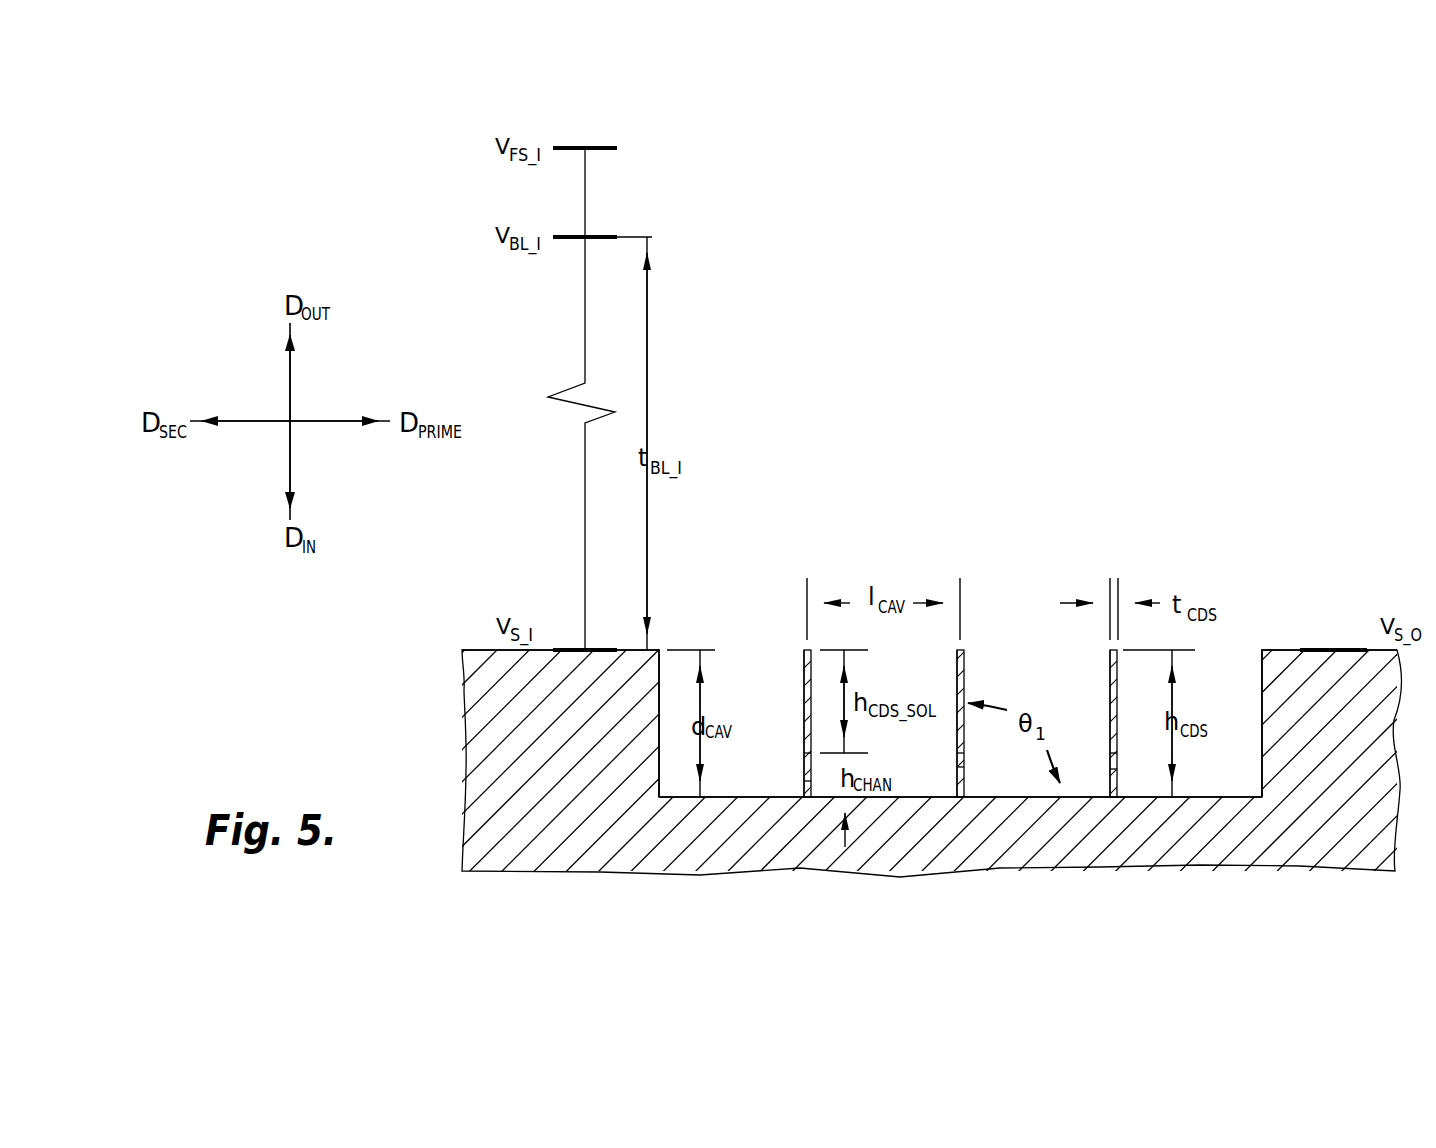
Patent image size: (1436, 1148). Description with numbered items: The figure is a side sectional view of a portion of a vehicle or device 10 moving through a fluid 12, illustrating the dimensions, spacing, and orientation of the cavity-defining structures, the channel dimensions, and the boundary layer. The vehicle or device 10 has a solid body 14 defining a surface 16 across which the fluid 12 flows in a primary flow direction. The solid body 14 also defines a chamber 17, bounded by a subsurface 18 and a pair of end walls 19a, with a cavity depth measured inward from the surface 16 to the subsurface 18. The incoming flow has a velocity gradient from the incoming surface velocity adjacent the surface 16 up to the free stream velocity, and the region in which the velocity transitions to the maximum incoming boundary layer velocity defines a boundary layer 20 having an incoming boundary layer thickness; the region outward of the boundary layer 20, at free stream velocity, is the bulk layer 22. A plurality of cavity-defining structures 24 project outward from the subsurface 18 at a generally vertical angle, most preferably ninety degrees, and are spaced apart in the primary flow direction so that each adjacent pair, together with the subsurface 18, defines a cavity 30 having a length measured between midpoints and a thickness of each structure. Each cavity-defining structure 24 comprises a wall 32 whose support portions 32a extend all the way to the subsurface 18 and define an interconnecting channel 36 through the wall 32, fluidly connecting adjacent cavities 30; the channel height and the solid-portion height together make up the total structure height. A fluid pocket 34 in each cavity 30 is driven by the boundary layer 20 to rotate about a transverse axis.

The vehicle or device 10 is at (1133, 153).
The fluid 12 is at (1010, 192).
The solid body 14 is at (498, 683).
The surface 16 is at (1292, 648).
The chamber 17 is at (1040, 620).
The subsurface 18 is at (1210, 797).
The end walls 19a is at (661, 760).
The boundary layer 20 is at (685, 350).
The bulk layer 22 is at (667, 190).
The cavity-defining structures 24 is at (800, 650).
The cavity 30 is at (915, 768).
The wall 32 is at (801, 699).
The support portions 32a is at (805, 781).
The fluid pocket 34 is at (933, 759).
The interconnecting channel 36 is at (802, 760).